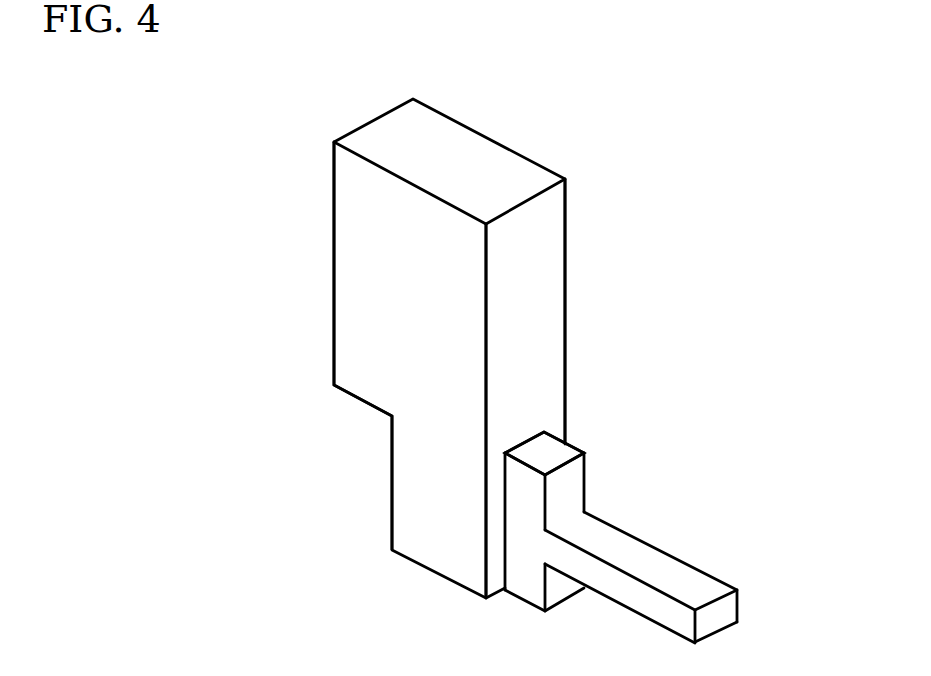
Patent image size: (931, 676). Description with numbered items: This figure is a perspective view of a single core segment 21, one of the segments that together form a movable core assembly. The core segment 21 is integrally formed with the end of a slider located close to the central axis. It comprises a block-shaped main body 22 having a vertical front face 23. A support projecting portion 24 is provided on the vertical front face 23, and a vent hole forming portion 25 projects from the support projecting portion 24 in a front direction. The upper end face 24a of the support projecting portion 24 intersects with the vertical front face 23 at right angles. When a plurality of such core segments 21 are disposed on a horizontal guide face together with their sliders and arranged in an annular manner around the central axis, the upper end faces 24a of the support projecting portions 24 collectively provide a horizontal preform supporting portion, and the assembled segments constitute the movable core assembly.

The core segment 21 is at (538, 163).
The main body 22 is at (358, 313).
The vertical front face 23 is at (540, 301).
The support projecting portion 24 is at (573, 486).
The upper end face 24a is at (547, 447).
The vent hole forming portion 25 is at (677, 575).